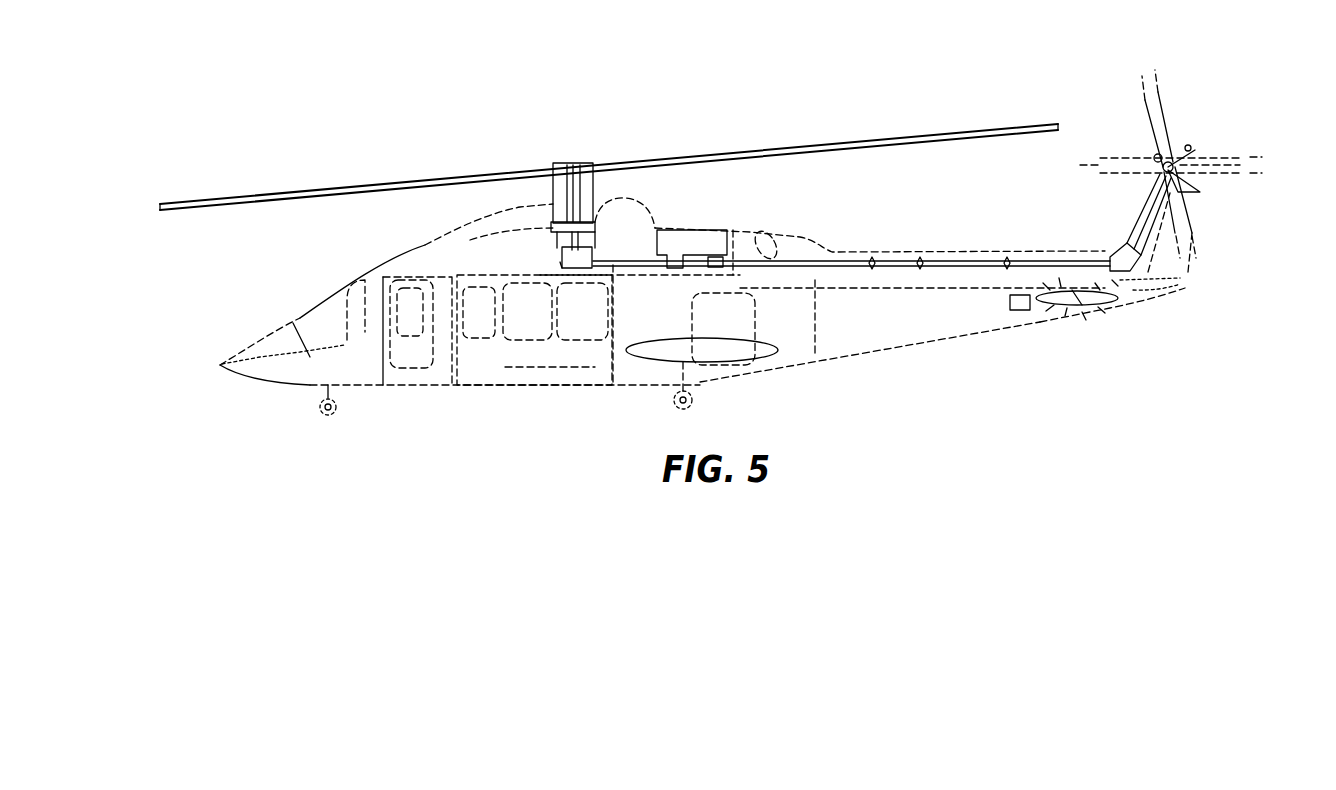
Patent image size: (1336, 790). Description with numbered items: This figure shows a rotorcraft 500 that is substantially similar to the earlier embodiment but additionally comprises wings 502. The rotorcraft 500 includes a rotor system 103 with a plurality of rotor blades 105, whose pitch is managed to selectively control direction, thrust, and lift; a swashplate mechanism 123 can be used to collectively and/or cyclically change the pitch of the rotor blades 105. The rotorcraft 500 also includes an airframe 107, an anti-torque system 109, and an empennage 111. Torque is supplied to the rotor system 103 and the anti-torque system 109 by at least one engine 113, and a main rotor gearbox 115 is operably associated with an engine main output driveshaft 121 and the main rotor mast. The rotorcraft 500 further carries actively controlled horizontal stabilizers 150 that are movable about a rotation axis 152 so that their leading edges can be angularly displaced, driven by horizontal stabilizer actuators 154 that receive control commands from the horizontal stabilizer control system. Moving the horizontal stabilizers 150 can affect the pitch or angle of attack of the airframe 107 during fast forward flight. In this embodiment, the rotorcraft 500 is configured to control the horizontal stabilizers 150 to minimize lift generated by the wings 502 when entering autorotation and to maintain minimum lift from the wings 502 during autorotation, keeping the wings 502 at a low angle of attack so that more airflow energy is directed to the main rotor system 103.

The rotorcraft 500 is at (403, 120).
The rotor system 103 is at (592, 147).
The rotor blades 105 is at (905, 139).
The airframe 107 is at (522, 388).
The anti-torque system 109 is at (1201, 134).
The empennage 111 is at (1028, 325).
The engine 113 is at (728, 238).
The main rotor gearbox 115 is at (560, 262).
The engine main output driveshaft 121 is at (633, 270).
The swashplate mechanism 123 is at (606, 214).
The horizontal stabilizers 150 is at (1110, 303).
The rotation axis 152 is at (1080, 298).
The horizontal stabilizer actuators 154 is at (1013, 312).
The wings 502 is at (772, 355).